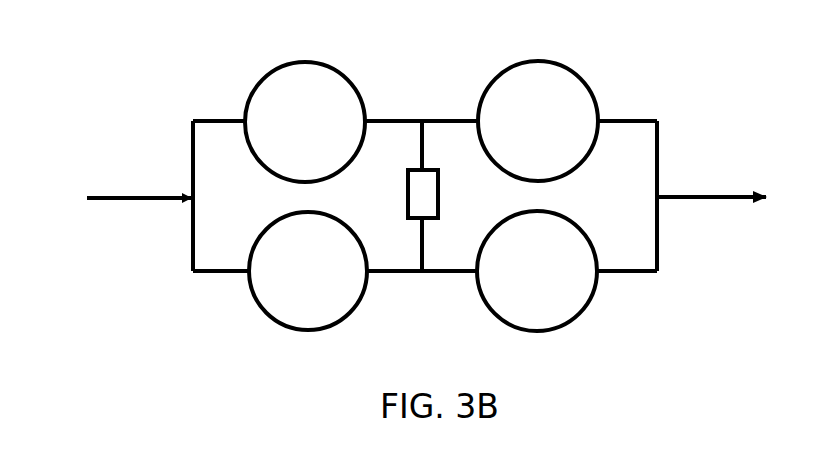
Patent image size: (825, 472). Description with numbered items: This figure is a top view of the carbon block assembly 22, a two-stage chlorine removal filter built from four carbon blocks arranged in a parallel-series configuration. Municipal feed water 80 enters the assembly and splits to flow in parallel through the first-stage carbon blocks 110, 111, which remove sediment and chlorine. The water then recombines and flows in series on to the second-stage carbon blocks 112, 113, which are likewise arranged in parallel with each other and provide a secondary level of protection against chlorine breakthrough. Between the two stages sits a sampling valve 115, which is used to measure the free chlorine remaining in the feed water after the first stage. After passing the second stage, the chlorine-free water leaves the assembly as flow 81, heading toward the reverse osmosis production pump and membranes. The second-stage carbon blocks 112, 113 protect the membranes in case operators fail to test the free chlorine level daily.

The carbon block assembly 22 is at (436, 60).
The feed water 80 is at (148, 184).
The flow 81 is at (695, 188).
The carbon block 110 is at (290, 305).
The carbon block 111 is at (346, 104).
The carbon block 112 is at (557, 112).
The carbon block 113 is at (556, 303).
The sampling valve 115 is at (420, 208).